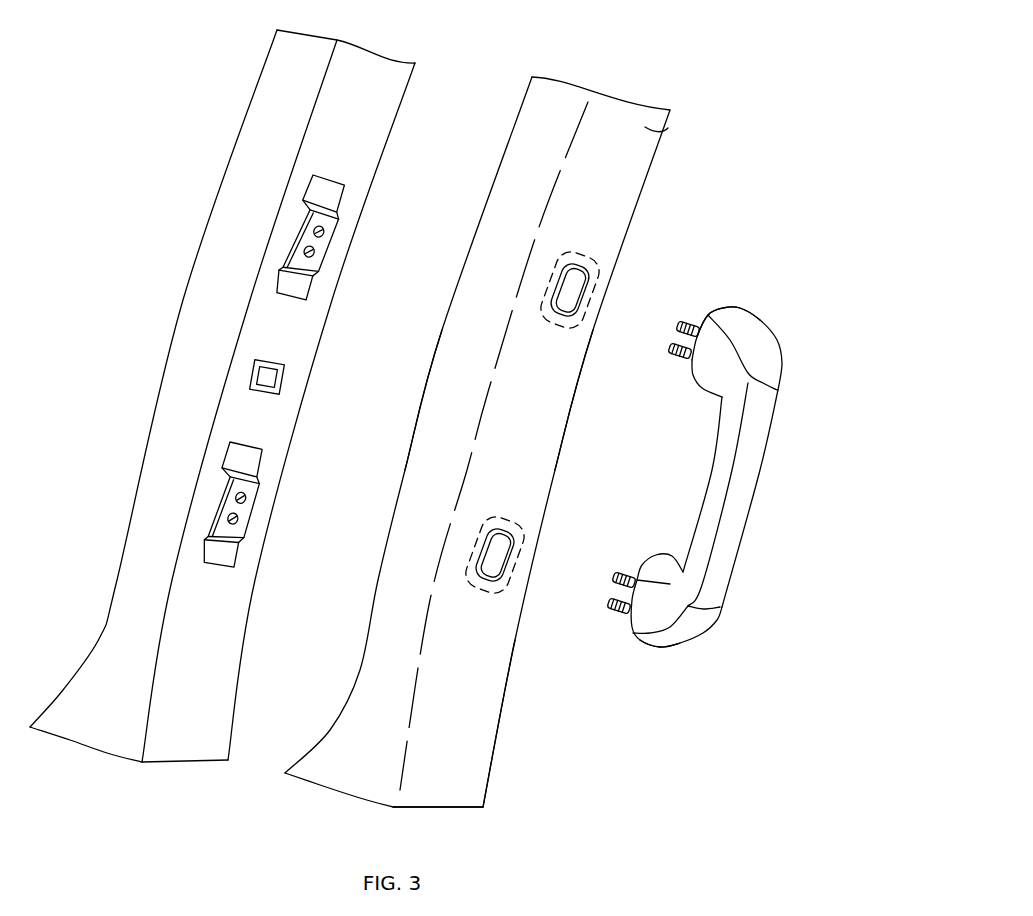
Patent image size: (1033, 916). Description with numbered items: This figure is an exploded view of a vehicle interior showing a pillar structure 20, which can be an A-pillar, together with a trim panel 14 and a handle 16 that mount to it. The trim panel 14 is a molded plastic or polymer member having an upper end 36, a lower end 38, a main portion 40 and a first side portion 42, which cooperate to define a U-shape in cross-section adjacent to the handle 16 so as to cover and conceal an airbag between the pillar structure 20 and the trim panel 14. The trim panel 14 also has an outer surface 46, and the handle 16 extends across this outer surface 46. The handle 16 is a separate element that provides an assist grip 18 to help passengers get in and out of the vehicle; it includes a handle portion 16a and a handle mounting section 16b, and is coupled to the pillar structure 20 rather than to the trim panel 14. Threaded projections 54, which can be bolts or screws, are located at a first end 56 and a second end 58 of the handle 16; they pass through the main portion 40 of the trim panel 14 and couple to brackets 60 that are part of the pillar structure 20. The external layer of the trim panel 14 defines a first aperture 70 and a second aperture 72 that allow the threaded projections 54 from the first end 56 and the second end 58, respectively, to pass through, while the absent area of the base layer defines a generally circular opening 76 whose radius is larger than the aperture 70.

The trim panel 14 is at (478, 224).
The handle 16 is at (710, 480).
The handle portion 16a is at (720, 562).
The handle mounting section 16b is at (695, 385).
The assist grip 18 is at (757, 490).
The pillar structure 20 is at (214, 205).
The upper end 36 is at (668, 128).
The lower end 38 is at (472, 790).
The main portion 40 is at (520, 447).
The first side portion 42 is at (408, 456).
The outer surface 46 is at (472, 683).
The threaded projections 54 is at (667, 346).
The first end 56 is at (720, 307).
The second end 58 is at (655, 646).
The brackets 60 is at (333, 250).
The first aperture 70 is at (587, 295).
The second aperture 72 is at (512, 558).
The circular opening 76 is at (543, 327).